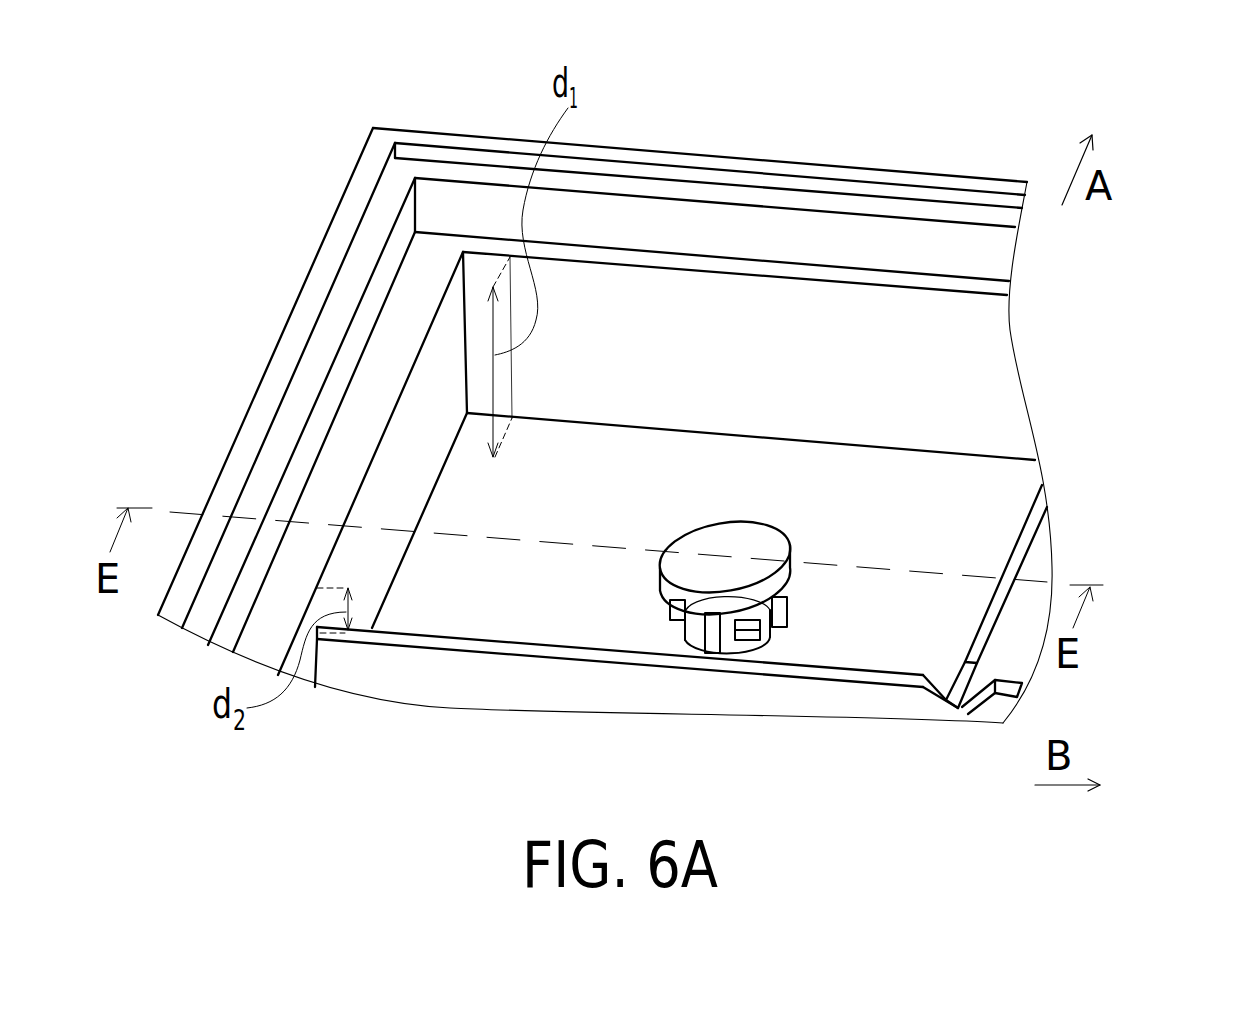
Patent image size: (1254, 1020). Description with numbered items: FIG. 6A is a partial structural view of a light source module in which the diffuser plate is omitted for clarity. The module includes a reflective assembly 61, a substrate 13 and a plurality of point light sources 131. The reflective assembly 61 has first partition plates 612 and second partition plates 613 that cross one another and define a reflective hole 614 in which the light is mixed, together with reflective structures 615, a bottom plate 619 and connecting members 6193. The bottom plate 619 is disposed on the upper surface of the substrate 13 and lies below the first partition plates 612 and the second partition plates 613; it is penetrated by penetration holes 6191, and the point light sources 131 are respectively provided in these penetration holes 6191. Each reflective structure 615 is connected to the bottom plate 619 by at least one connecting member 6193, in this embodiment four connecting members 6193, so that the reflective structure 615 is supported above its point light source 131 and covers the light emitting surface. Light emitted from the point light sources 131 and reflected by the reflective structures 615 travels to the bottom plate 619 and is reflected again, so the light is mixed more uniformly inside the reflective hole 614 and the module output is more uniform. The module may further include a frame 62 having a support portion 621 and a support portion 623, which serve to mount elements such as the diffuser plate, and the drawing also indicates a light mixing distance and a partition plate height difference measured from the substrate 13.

The substrate 13 is at (725, 454).
The point light source 131 is at (730, 632).
The reflective assembly 61 is at (668, 527).
The first partition plate 612 is at (1015, 556).
The second partition plate 613 is at (445, 662).
The reflective hole 614 is at (950, 488).
The reflective structure 615 is at (733, 543).
The bottom plate 619 is at (720, 715).
The penetration hole 6191 is at (771, 637).
The connecting member 6193 is at (787, 612).
The frame 62 is at (592, 341).
The support portion 621 is at (418, 280).
The support portion 623 is at (437, 178).